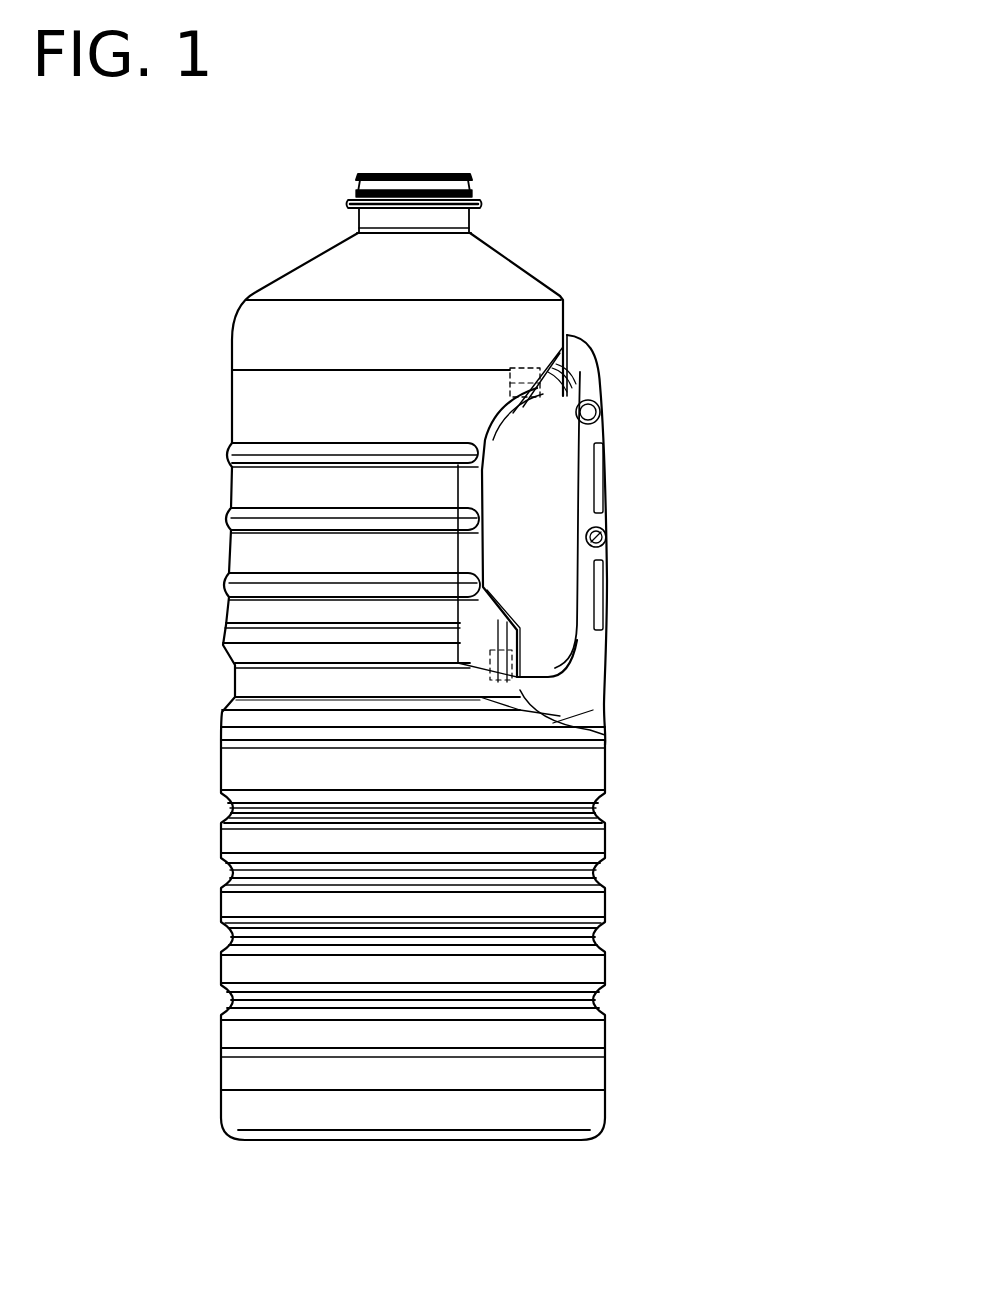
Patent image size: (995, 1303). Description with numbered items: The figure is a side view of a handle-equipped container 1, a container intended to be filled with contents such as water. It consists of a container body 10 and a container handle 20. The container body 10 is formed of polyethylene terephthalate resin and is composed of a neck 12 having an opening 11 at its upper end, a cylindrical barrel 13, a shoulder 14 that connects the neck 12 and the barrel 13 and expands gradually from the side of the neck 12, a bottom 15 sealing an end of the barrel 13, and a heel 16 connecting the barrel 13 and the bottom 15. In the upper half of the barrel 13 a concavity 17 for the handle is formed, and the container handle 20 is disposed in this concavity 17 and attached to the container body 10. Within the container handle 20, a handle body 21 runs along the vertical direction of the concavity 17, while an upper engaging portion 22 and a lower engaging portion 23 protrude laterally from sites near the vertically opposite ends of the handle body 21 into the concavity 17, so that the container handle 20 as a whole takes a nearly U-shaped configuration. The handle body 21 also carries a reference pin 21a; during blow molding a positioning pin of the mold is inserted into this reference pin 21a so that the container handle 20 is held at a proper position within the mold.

The handle-equipped container 1 is at (710, 197).
The container body 10 is at (572, 288).
The opening 11 is at (443, 172).
The neck 12 is at (455, 223).
The barrel 13 is at (235, 556).
The shoulder 14 is at (497, 268).
The bottom 15 is at (407, 1127).
The heel 16 is at (582, 1112).
The concavity 17 is at (545, 522).
The container handle 20 is at (603, 345).
The handle body 21 is at (590, 642).
The reference pin 21a is at (607, 540).
The upper engaging portion 22 is at (567, 386).
The lower engaging portion 23 is at (575, 660).